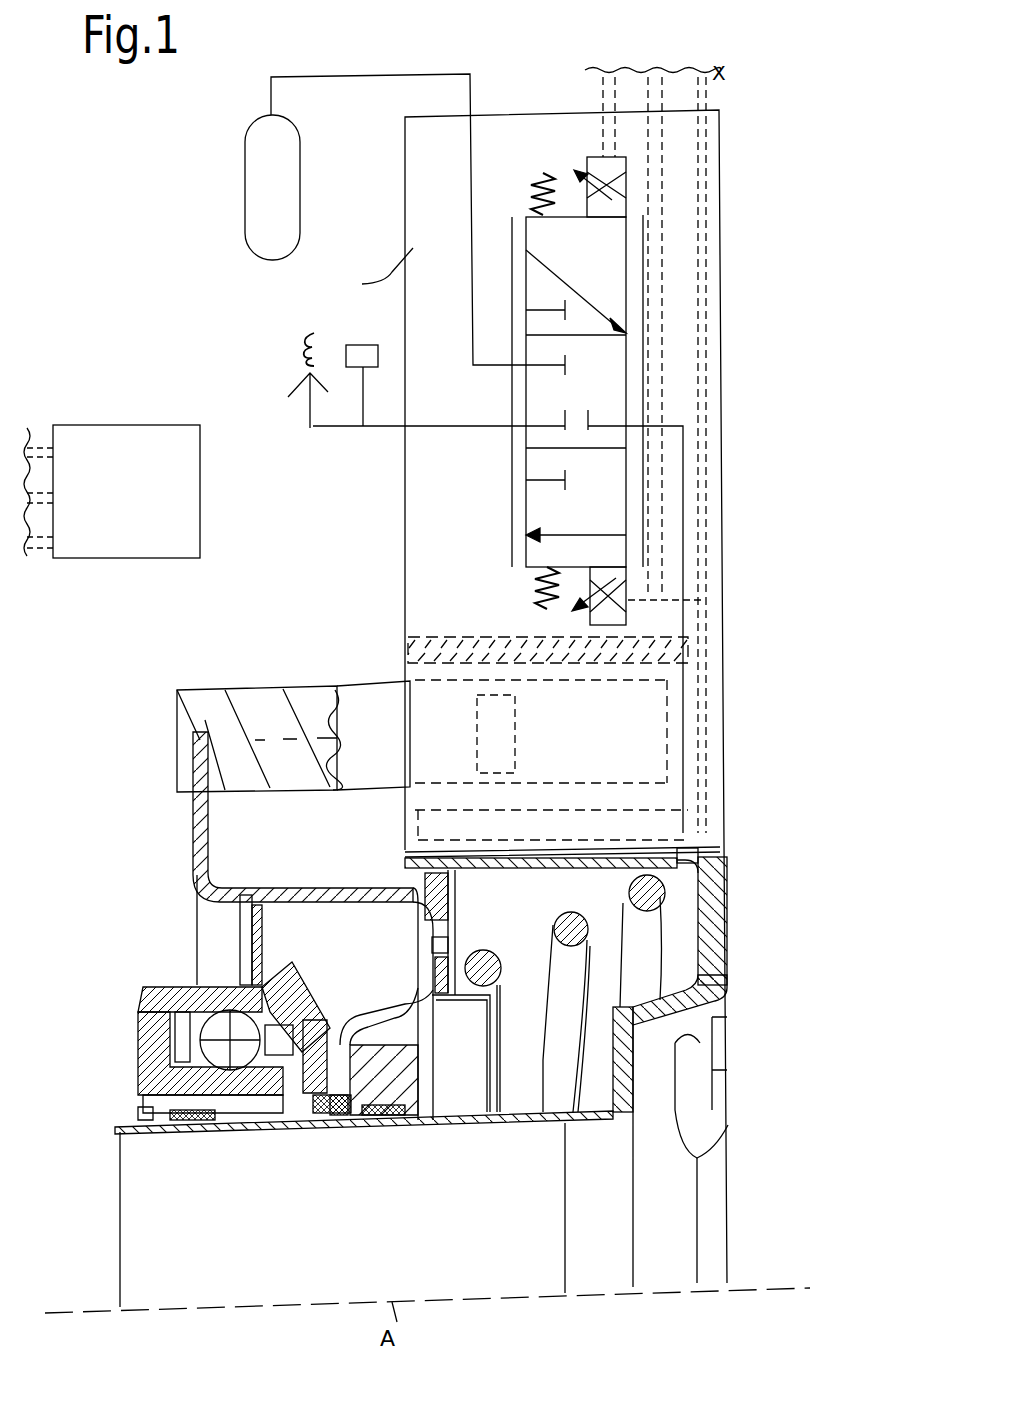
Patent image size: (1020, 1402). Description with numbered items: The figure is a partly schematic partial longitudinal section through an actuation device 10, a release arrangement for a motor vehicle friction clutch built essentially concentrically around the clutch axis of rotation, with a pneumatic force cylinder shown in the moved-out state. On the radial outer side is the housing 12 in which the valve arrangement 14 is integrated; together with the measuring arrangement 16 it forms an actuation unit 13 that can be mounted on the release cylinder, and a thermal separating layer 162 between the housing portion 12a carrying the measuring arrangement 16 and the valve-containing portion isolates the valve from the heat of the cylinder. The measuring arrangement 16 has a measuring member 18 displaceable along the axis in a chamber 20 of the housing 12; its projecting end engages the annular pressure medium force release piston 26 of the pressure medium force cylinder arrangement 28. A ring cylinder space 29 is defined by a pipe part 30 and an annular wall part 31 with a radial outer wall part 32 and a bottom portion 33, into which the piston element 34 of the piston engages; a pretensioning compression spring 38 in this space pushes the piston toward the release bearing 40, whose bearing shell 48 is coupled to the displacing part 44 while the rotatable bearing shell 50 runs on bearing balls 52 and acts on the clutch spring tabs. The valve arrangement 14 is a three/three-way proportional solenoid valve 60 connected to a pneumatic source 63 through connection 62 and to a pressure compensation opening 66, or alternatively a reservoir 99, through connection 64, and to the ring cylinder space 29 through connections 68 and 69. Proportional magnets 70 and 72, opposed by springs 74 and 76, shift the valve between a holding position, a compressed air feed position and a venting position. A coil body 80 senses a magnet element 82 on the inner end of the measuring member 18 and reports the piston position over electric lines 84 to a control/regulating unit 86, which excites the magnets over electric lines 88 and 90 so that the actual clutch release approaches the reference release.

The actuation device 10 is at (160, 258).
The housing 12 is at (719, 280).
The housing portion 12a is at (415, 800).
The actuation unit 13 is at (755, 235).
The valve arrangement 14 is at (610, 372).
The measuring arrangement 16 is at (649, 721).
The measuring member 18 is at (205, 707).
The chamber 20 is at (647, 758).
The pressure medium force release piston 26 is at (198, 820).
The pressure medium force cylinder arrangement 28 is at (683, 948).
The ring cylinder space 29 is at (688, 988).
The pipe part 30 is at (470, 1122).
The annular wall part 31 is at (727, 878).
The radial outer wall part 32 is at (558, 862).
The bottom portion 33 is at (718, 908).
The piston element 34 is at (483, 1112).
The pretensioning compression spring 38 is at (572, 1123).
The release bearing 40 is at (124, 1005).
The displacing part 44 is at (283, 1113).
The bearing shell 48 is at (163, 987).
The bearing shell 50 is at (140, 1080).
The bearing balls 52 is at (240, 1058).
The 3/3-way proportional solenoid valve 60 is at (610, 487).
The connection 62 is at (473, 115).
The pneumatic source 63 is at (260, 145).
The connection 64 is at (403, 427).
The pressure compensation opening 66 is at (310, 373).
The connection 68 is at (700, 850).
The connection 69 is at (722, 860).
The proportional magnet 70 is at (615, 607).
The proportional magnet 72 is at (610, 207).
The spring 74 is at (534, 594).
The spring 76 is at (530, 190).
The coil body 80 is at (705, 822).
The magnet element 82 is at (500, 720).
The electric lines 84 is at (700, 78).
The control/regulating unit 86 is at (200, 558).
The electric line 88 is at (607, 75).
The electric line 90 is at (656, 85).
The pressure compensation reservoir 99 is at (363, 350).
The thermal separating layer 162 is at (700, 652).